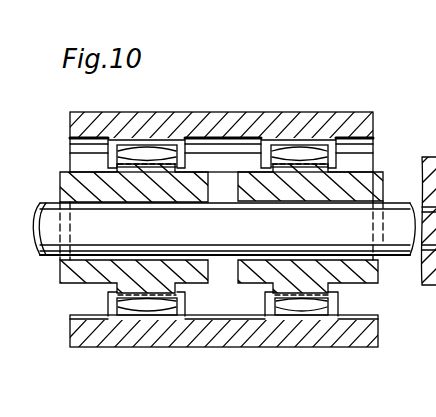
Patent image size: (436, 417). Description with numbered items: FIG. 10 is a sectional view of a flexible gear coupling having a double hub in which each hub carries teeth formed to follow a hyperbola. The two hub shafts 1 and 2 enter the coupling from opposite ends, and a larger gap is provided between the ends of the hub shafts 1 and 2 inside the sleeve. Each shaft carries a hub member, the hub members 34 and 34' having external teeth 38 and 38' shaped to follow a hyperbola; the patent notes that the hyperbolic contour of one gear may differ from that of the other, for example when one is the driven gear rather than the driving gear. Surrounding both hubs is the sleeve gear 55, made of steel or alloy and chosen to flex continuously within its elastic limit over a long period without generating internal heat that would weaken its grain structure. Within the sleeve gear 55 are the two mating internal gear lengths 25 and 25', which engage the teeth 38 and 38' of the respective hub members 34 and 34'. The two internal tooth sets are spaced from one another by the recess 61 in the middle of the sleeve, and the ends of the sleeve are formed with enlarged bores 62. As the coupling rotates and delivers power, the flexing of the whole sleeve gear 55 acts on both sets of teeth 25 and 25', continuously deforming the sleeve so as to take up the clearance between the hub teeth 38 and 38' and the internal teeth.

The hub shaft 1 is at (392, 253).
The hub shaft 2 is at (48, 236).
The internal gear length 25 is at (146, 198).
The internal gear length 25' is at (299, 196).
The hub member 34 is at (130, 220).
The hub member 34' is at (317, 218).
The teeth 38 is at (158, 186).
The teeth 38' is at (333, 190).
The sleeve gear 55 is at (188, 127).
The recess 61 is at (236, 315).
The enlarged bore 62 is at (80, 317).